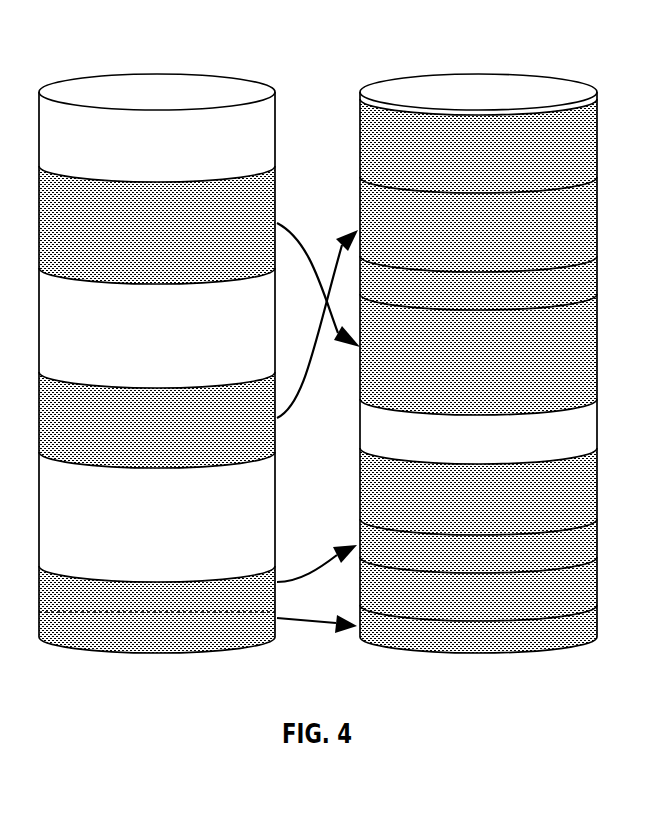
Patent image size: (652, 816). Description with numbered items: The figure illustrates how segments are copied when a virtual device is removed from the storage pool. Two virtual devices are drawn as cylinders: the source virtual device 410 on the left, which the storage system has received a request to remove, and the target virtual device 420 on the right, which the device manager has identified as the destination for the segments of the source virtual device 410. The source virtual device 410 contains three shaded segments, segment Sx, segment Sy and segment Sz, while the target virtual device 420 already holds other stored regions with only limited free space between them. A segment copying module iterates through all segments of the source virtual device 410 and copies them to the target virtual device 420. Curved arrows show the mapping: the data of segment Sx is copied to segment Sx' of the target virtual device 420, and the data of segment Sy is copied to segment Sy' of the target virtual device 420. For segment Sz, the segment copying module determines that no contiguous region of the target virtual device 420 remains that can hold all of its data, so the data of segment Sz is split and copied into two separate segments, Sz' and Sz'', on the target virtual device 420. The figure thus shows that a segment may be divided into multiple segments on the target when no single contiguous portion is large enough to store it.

The source virtual device 410 is at (228, 51).
The target virtual device 420 is at (552, 51).
The segment Sx is at (157, 225).
The segment Sy is at (157, 420).
The segment Sz is at (157, 609).
The segment Sy' is at (478, 224).
The segment Sx' is at (478, 335).
The segment Sz' is at (478, 546).
The segment Sz'' is at (478, 605).